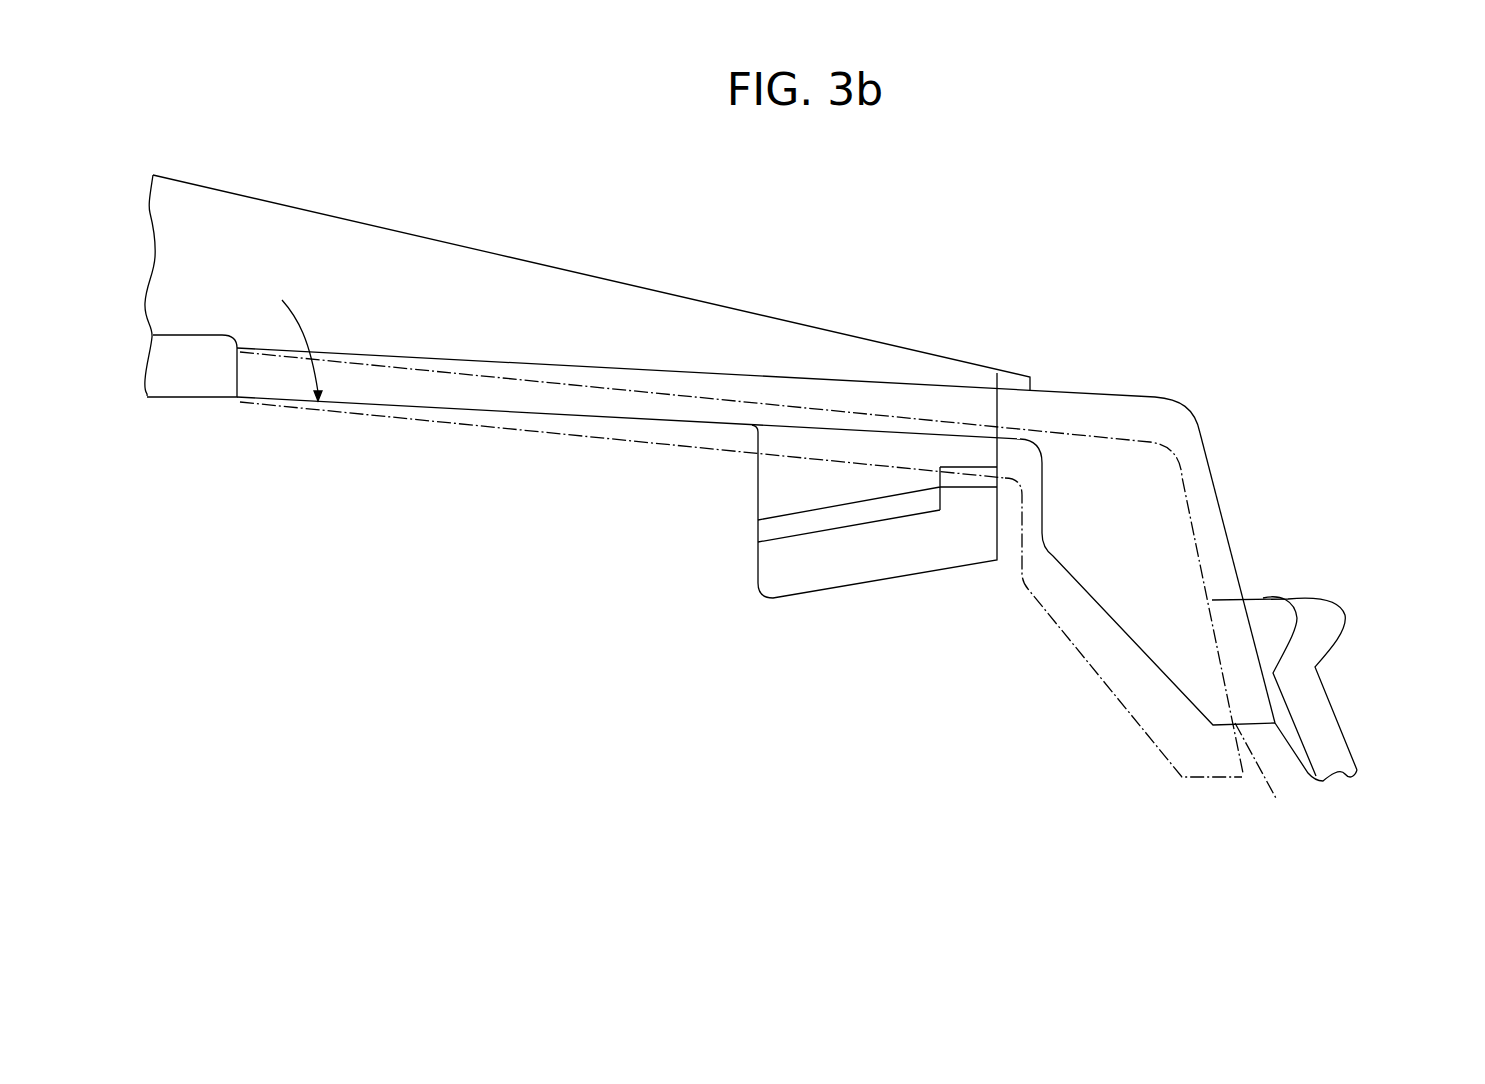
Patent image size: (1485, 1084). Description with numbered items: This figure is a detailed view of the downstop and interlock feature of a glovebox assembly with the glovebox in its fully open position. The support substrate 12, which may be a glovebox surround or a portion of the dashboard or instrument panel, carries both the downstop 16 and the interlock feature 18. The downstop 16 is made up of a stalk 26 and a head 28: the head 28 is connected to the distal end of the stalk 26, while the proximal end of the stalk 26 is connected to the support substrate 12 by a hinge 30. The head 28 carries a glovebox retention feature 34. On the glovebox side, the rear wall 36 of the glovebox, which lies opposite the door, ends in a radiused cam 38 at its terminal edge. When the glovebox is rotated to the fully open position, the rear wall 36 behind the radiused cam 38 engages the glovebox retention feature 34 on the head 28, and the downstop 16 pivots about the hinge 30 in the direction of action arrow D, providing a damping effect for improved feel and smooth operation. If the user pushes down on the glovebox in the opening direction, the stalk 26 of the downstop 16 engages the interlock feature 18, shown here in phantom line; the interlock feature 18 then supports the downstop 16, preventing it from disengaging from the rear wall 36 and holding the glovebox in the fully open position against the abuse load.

The support substrate 12 is at (312, 211).
The downstop 16 is at (1165, 400).
The interlock feature 18 is at (790, 600).
The stalk 26 is at (573, 415).
The head 28 is at (1200, 507).
The hinge 30 is at (235, 373).
The glovebox retention feature 34 is at (1238, 562).
The rear wall 36 is at (1328, 737).
The radiused cam 38 is at (1343, 605).
The action arrow D is at (308, 332).